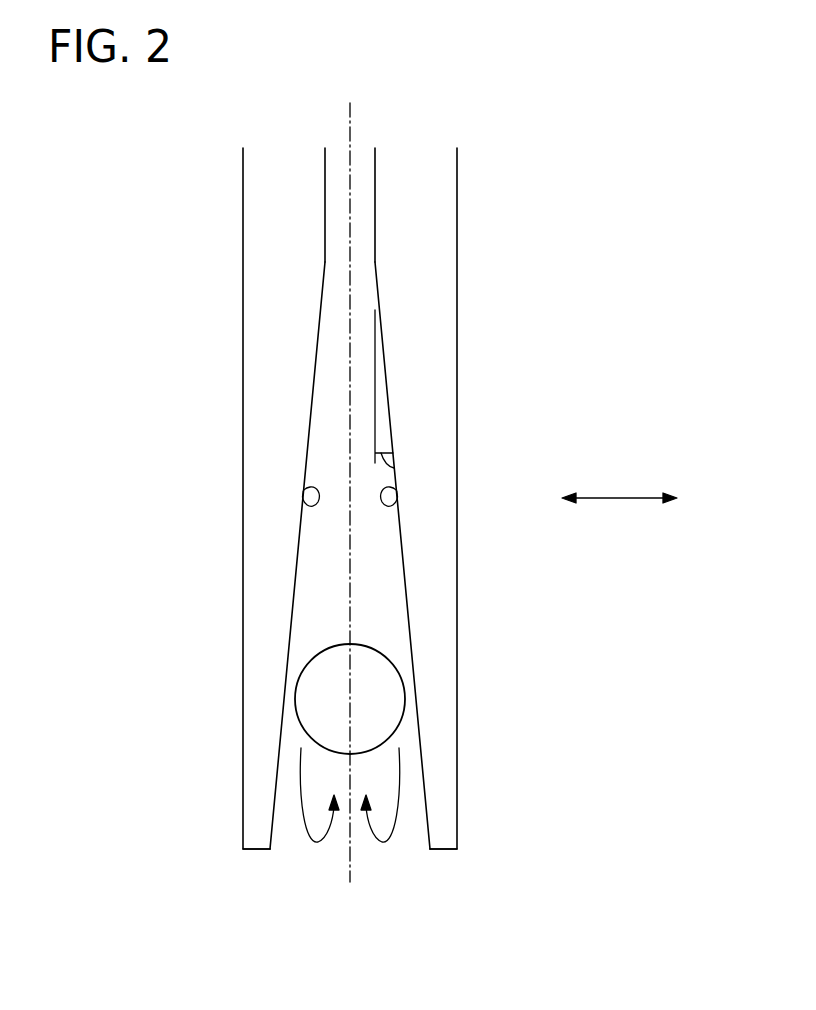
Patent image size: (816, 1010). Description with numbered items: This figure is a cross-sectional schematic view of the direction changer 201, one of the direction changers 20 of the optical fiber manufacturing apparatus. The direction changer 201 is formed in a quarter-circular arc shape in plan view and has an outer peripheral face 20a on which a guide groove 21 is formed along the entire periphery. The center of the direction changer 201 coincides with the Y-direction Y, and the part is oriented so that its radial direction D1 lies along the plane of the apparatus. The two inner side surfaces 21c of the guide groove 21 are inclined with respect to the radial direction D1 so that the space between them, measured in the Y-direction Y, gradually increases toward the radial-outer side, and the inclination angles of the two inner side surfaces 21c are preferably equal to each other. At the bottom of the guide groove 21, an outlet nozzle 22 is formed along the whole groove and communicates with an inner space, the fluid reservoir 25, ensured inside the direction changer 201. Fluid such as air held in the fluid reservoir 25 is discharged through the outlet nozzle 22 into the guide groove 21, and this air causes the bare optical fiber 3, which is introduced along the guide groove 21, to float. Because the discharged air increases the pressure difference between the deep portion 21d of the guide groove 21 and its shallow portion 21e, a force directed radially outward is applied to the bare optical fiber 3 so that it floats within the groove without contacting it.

The direction changer 201 is at (457, 203).
The direction changer 20 is at (432, 498).
The guide groove 21 is at (348, 498).
The inner side surfaces 21c is at (300, 508).
The deep portion 21d is at (332, 381).
The shallow portion 21e is at (333, 773).
The outlet nozzle 22 is at (362, 262).
The fluid reservoir 25 is at (362, 207).
The bare optical fiber 3 is at (405, 697).
The outer peripheral face 20a is at (258, 850).
The radial direction D1 is at (350, 883).
The Y-direction Y is at (619, 483).